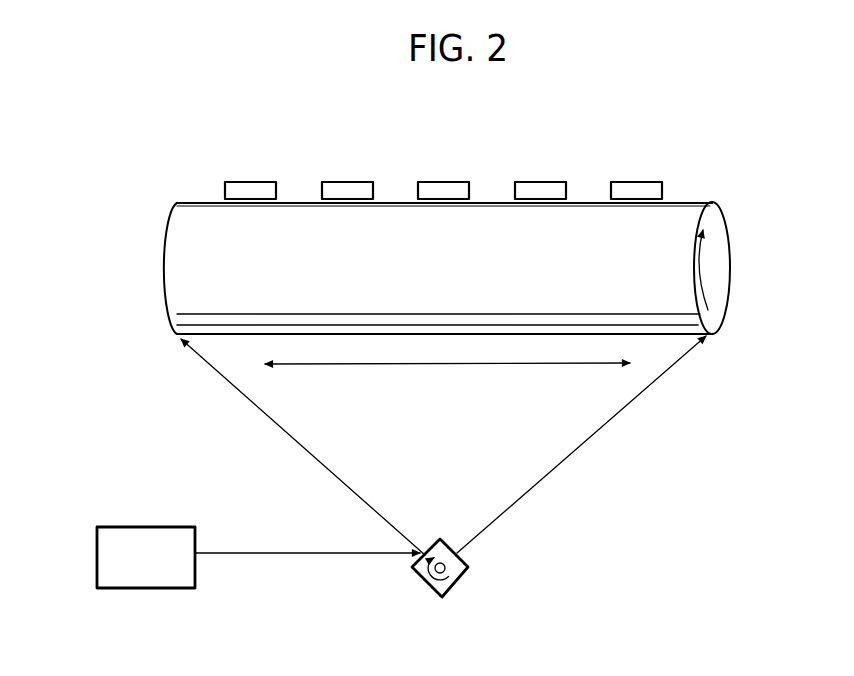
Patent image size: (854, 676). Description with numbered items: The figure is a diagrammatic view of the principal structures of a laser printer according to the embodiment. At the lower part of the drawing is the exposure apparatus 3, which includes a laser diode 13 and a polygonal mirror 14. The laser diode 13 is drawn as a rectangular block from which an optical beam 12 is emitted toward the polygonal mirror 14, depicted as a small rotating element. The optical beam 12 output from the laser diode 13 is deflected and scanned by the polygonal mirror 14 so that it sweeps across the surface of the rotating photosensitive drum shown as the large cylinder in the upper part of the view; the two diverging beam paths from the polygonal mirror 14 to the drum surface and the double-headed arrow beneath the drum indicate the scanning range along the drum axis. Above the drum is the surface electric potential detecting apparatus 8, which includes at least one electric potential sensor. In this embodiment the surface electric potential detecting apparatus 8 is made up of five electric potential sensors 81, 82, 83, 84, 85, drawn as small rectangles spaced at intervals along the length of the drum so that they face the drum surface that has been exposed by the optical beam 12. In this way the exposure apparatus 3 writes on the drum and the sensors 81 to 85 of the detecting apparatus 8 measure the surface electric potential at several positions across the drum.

The surface electric potential detecting apparatus 8 is at (685, 130).
The electric potential sensor 81 is at (254, 181).
The electric potential sensor 82 is at (347, 181).
The electric potential sensor 83 is at (441, 181).
The electric potential sensor 84 is at (541, 181).
The electric potential sensor 85 is at (636, 181).
The exposure apparatus 3 is at (460, 598).
The optical beam 12 is at (264, 552).
The laser diode 13 is at (145, 526).
The polygonal mirror 14 is at (468, 567).